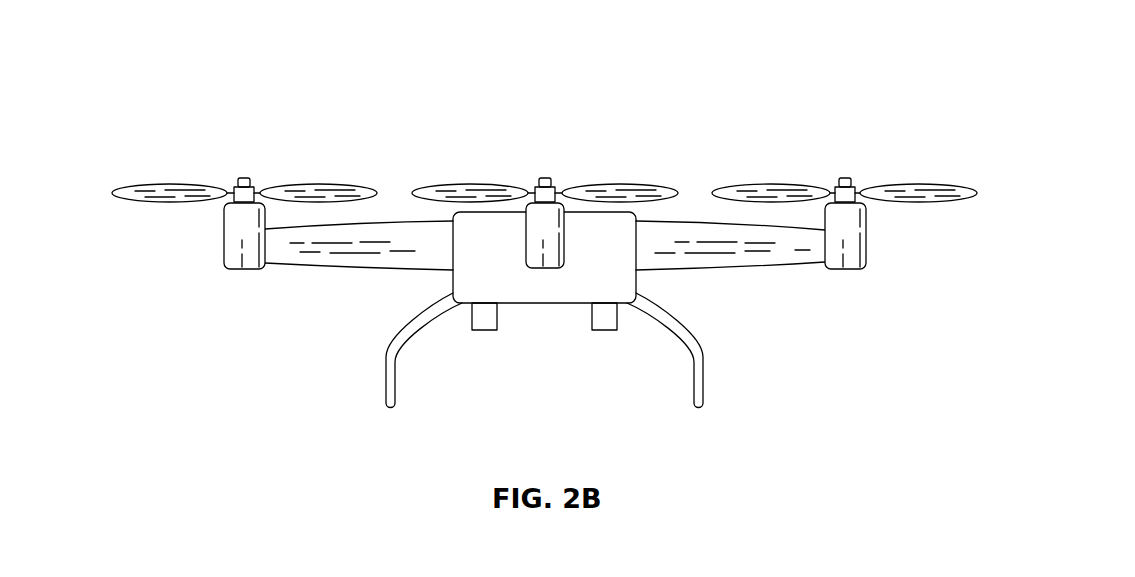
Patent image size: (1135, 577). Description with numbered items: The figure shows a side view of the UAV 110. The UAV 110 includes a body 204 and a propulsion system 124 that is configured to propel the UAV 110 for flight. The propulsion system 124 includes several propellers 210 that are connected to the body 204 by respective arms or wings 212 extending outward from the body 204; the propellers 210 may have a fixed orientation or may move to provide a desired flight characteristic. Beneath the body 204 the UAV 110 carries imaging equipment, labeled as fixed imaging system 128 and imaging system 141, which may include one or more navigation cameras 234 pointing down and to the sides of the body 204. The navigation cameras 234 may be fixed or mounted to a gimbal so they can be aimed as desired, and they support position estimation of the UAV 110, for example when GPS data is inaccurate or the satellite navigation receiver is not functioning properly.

The UAV 110 is at (875, 39).
The propulsion system 124 is at (223, 233).
The body 204 is at (492, 212).
The propellers 210 is at (243, 177).
The arms or wings 212 is at (680, 223).
The navigation cameras 234 is at (485, 331).
The fixed imaging system 128 is at (551, 365).
The imaging system 141 is at (601, 352).